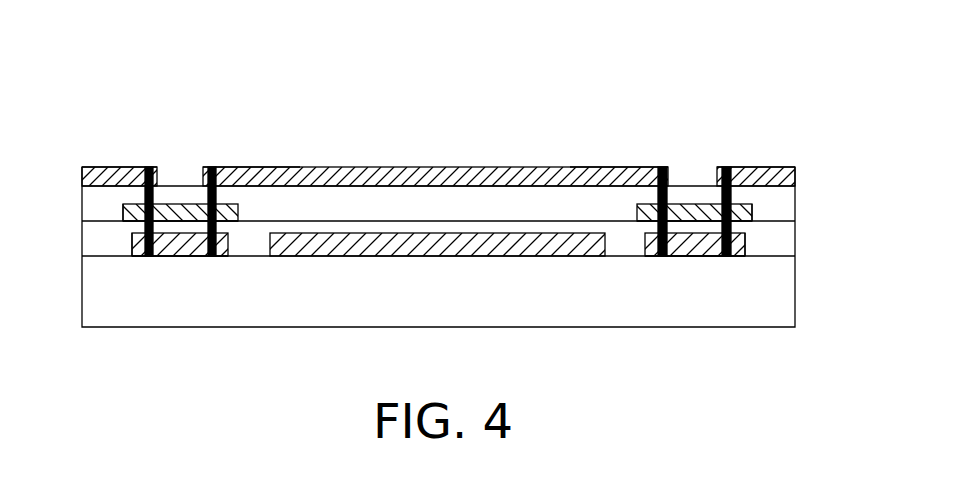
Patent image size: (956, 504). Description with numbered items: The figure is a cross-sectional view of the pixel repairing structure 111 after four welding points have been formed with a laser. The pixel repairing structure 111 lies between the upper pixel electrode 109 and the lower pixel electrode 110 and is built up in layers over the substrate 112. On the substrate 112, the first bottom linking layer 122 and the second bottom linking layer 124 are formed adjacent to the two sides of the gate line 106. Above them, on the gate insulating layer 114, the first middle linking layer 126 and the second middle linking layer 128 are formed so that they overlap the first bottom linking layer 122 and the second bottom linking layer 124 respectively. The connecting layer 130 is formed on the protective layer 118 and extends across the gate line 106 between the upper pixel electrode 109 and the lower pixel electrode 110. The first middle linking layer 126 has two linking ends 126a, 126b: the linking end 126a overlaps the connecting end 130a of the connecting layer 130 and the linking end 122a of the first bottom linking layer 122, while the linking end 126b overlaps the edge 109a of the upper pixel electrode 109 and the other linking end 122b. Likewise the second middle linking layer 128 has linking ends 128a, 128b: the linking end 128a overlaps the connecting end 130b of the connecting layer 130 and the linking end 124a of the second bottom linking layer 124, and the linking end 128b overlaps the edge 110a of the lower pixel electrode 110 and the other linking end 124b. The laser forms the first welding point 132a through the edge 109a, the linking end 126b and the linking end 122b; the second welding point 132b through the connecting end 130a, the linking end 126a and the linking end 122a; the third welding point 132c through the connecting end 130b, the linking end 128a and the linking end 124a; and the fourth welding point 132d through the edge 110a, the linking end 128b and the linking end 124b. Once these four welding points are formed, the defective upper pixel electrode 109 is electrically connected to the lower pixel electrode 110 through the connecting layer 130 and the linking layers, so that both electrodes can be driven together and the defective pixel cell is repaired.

The pixel repairing structure 111 is at (72, 99).
The gate line 106 is at (437, 247).
The upper pixel electrode 109 is at (115, 167).
The edge of the upper pixel electrode 109a is at (147, 167).
The lower pixel electrode 110 is at (793, 170).
The edge of the lower pixel electrode 110a is at (738, 172).
The substrate 112 is at (375, 278).
The gate insulating layer 114 is at (262, 248).
The protective layer 118 is at (385, 198).
The first bottom linking layer 122 is at (180, 248).
The linking end of the first bottom linking layer 122a is at (218, 252).
The linking end of the first bottom linking layer 122b is at (132, 246).
The second bottom linking layer 124 is at (690, 247).
The linking end of the second bottom linking layer 124a is at (655, 250).
The linking end of the second bottom linking layer 124b is at (747, 250).
The first middle linking layer 126 is at (178, 210).
The linking end of the first middle linking layer 126a is at (226, 242).
The linking end of the first middle linking layer 126b is at (125, 213).
The second middle linking layer 128 is at (679, 211).
The linking end of the second middle linking layer 128a is at (624, 221).
The linking end of the second middle linking layer 128b is at (742, 215).
The connecting layer 130 is at (497, 177).
The connecting end of the connecting layer 130a is at (228, 180).
The connecting end of the connecting layer 130b is at (653, 178).
The first welding point 132a is at (153, 167).
The second welding point 132b is at (213, 167).
The third welding point 132c is at (660, 168).
The fourth welding point 132d is at (727, 168).